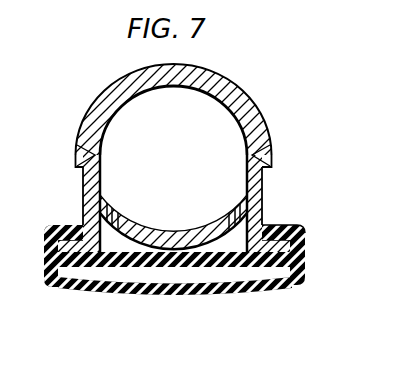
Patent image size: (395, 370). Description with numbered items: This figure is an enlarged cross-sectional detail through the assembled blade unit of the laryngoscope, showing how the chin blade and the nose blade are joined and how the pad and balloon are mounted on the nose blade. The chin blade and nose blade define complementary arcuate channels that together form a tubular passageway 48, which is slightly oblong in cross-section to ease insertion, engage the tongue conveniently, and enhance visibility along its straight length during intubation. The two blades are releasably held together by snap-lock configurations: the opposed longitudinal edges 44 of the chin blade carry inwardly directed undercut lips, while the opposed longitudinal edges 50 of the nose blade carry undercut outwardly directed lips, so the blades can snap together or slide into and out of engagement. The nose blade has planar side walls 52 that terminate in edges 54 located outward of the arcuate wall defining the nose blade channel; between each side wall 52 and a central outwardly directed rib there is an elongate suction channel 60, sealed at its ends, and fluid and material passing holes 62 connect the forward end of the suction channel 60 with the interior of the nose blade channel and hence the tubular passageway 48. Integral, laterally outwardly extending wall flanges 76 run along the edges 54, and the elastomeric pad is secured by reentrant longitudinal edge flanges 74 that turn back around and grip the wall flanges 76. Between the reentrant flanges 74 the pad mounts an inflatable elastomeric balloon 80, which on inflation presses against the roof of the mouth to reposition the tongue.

The opposed longitudinal edges of the chin blade 44 is at (274, 160).
The tubular passageway 48 is at (128, 113).
The opposed longitudinal edges of the nose blade 50 is at (250, 155).
The side walls 52 is at (90, 190).
The edges of the side walls 54 is at (88, 244).
The suction channel 60 is at (228, 246).
The fluid and material passing holes 62 is at (208, 201).
The reentrant longitudinal edge flanges 74 is at (291, 228).
The wall flanges 76 is at (299, 282).
The inflatable elastomeric balloon 80 is at (250, 283).